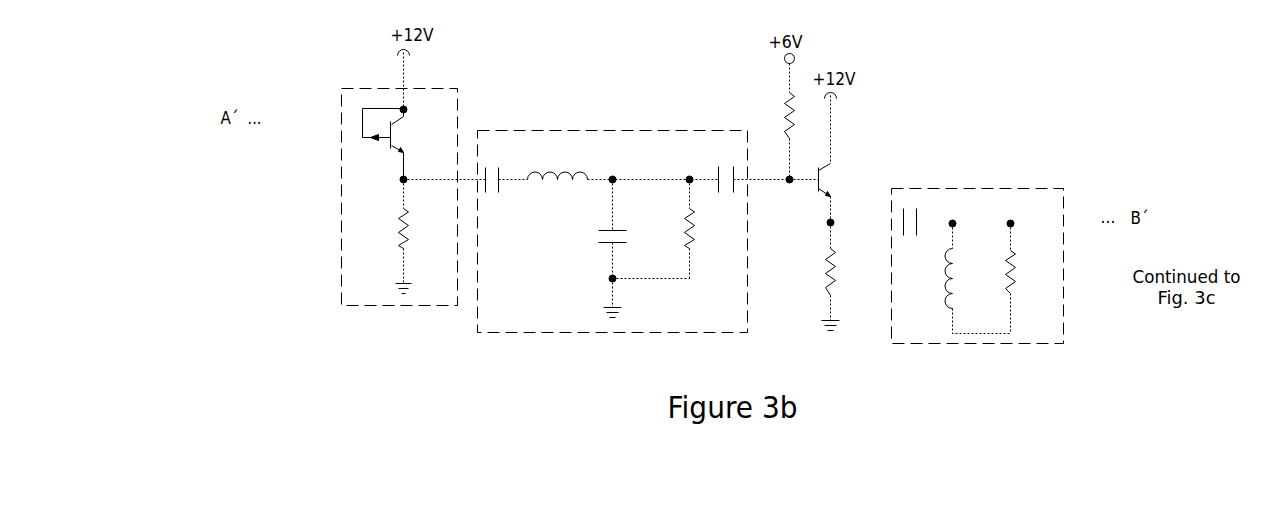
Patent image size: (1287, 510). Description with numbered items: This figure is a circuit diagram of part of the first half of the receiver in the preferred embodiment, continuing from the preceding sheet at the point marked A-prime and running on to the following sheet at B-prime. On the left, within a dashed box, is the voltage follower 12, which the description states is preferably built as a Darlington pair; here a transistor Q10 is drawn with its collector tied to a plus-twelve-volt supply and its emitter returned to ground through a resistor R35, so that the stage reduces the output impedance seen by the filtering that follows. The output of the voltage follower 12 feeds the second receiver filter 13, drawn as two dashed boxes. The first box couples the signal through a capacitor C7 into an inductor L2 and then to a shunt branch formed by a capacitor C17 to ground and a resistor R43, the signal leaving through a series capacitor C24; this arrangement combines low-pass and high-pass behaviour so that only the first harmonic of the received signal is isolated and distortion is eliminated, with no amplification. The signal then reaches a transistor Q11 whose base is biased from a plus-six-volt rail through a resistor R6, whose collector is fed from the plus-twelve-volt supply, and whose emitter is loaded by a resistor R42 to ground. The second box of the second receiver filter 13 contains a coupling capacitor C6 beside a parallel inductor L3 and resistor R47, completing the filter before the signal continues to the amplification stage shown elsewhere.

The voltage follower 12 is at (395, 307).
The second receiver filter 13 is at (620, 122).
The transistor Q10 is at (405, 144).
The transistor Q11 is at (831, 159).
The resistor R35 is at (425, 237).
The resistor R6 is at (775, 136).
The resistor R42 is at (850, 277).
The resistor R43 is at (712, 229).
The resistor R47 is at (1032, 279).
The capacitor C7 is at (507, 194).
The capacitor C17 is at (633, 229).
The capacitor C24 is at (748, 169).
The capacitor C6 is at (916, 236).
The inductor L2 is at (558, 165).
The inductor L3 is at (977, 279).